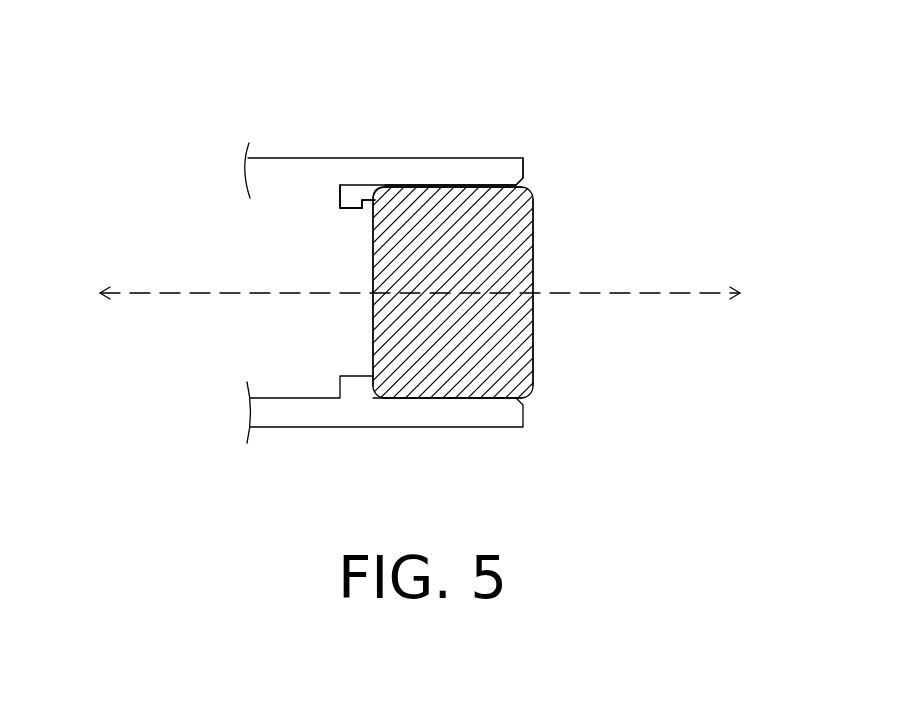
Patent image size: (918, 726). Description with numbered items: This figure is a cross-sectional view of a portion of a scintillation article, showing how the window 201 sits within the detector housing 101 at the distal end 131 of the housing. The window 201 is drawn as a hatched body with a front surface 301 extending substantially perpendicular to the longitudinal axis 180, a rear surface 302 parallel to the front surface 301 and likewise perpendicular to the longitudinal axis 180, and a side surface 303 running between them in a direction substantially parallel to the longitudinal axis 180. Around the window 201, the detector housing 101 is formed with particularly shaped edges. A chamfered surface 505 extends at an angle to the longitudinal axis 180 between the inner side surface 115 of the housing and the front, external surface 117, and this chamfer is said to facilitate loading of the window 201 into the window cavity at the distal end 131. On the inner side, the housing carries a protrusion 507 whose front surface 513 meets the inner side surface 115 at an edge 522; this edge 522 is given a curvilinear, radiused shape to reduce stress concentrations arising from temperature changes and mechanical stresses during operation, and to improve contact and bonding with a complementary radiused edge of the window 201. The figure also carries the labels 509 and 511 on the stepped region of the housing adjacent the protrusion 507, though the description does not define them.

The detector housing 101 is at (273, 173).
The protrusion 507 is at (353, 195).
The recess 509 is at (338, 198).
The front surface of the protrusion 513 is at (373, 202).
The notch wall 511 is at (363, 212).
The edge 522 is at (377, 190).
The side surface 303 is at (487, 187).
The front, external surface 117 is at (523, 165).
The chamfered surface 505 is at (520, 182).
The window 201 is at (503, 285).
The front surface 301 is at (533, 345).
The rear surface 302 is at (375, 288).
The inner side surface 115 is at (417, 398).
The distal end 131 is at (546, 422).
The longitudinal axis 180 is at (672, 292).